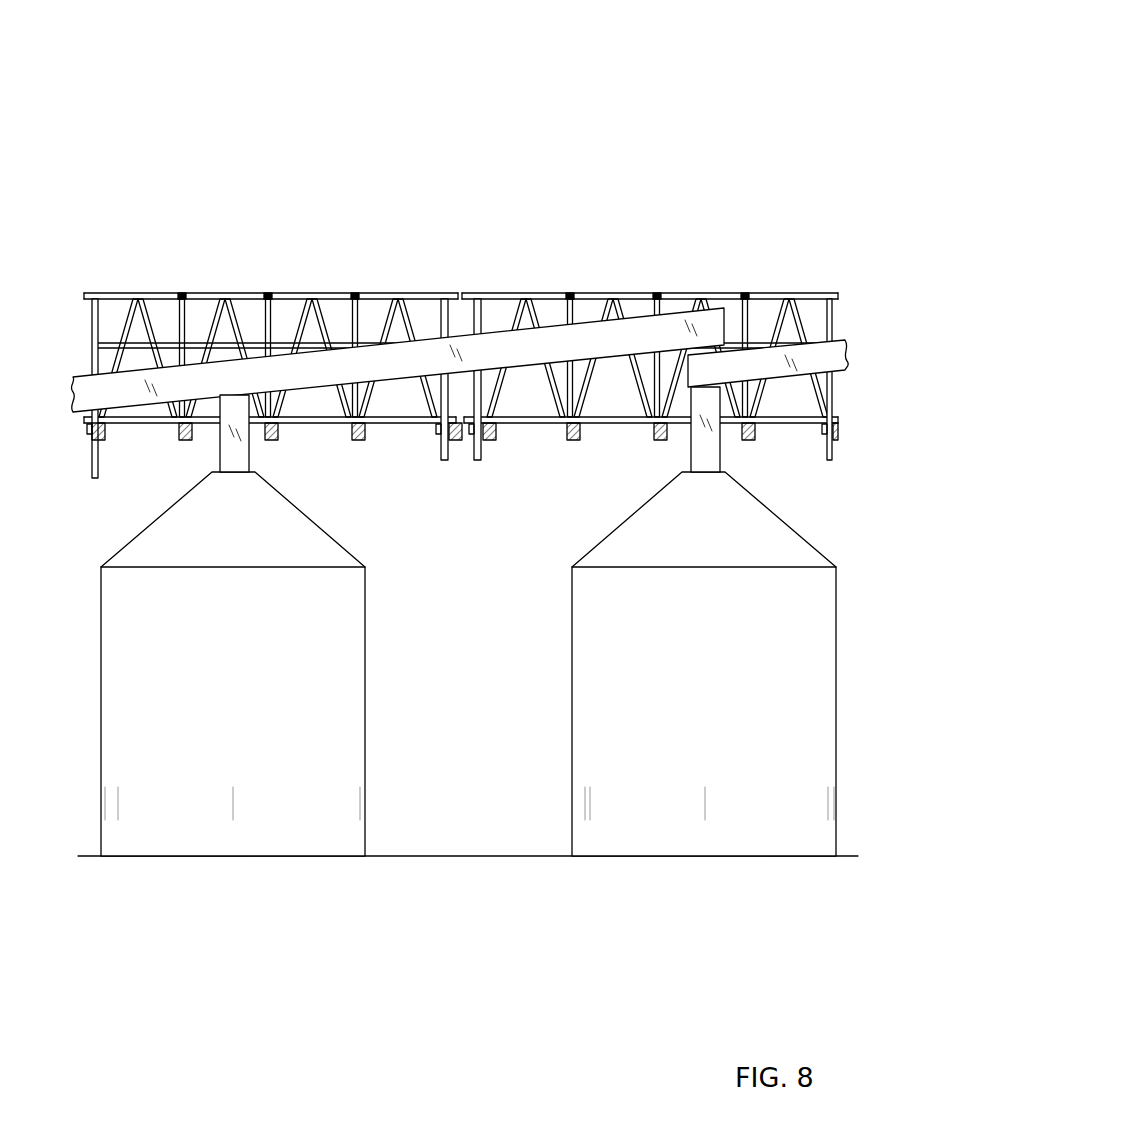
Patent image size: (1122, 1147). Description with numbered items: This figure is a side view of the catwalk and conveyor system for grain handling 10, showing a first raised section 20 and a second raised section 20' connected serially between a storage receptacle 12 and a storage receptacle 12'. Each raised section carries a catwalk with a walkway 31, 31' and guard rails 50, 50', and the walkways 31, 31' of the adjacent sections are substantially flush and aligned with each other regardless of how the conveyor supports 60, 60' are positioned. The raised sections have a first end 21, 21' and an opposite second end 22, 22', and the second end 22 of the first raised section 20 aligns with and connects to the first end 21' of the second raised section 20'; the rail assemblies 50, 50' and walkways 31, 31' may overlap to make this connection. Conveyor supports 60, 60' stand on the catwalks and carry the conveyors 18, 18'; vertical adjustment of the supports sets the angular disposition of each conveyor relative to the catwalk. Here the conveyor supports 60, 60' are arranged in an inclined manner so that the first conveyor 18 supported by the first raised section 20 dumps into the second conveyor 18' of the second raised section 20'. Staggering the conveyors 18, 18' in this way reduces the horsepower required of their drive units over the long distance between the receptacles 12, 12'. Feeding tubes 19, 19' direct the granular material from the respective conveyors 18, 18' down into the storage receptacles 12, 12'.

The catwalk and conveyor system for grain handling 10 is at (718, 84).
The storage receptacle 12 is at (233, 705).
The storage receptacle 12' is at (704, 700).
The conveyor 18 is at (271, 313).
The conveyor 18' is at (657, 274).
The feeding tube 19 is at (190, 440).
The feeding tube 19' is at (638, 460).
The raised section 20 is at (271, 305).
The raised section 20' is at (650, 303).
The first end 21 is at (96, 424).
The first end 21' is at (503, 452).
The second end 22 is at (429, 445).
The second end 22' is at (825, 416).
The walkway 31 is at (270, 450).
The walkway 31' is at (651, 460).
The guard rail 50 is at (397, 311).
The guard rail 50' is at (760, 292).
The conveyor support 60 is at (264, 490).
The conveyor support 60' is at (648, 497).